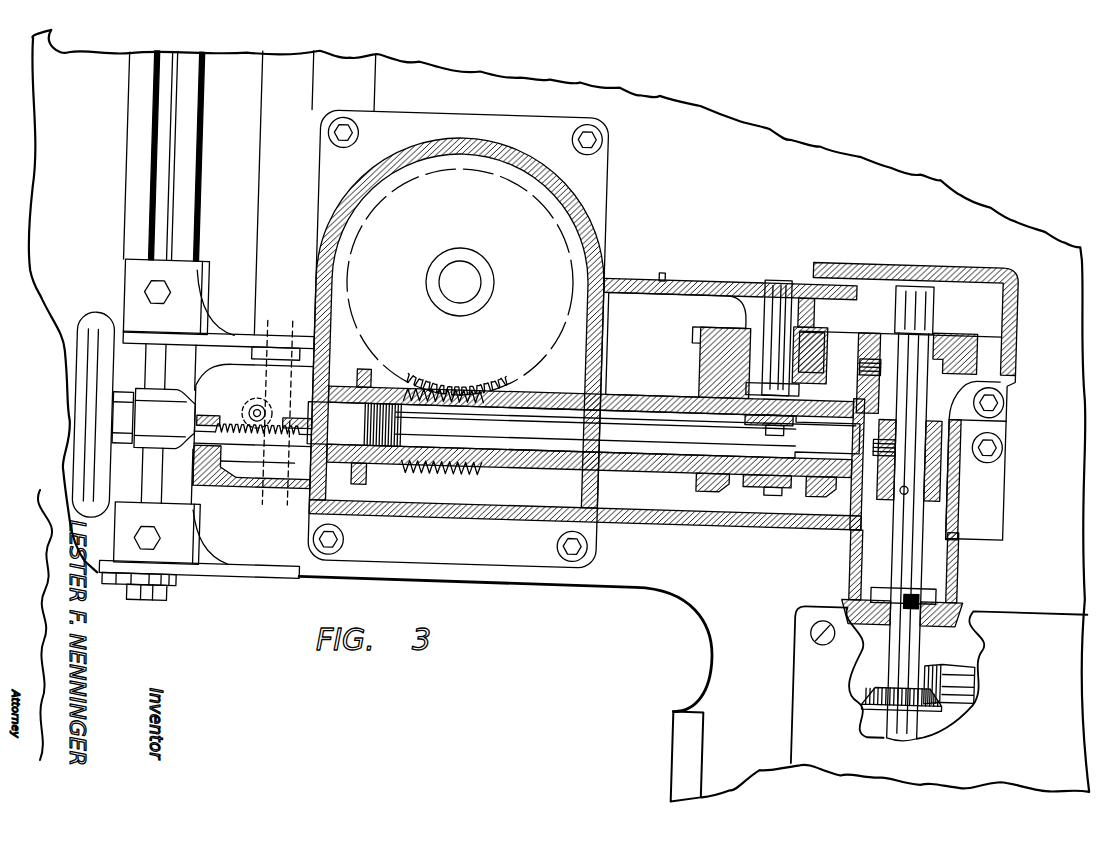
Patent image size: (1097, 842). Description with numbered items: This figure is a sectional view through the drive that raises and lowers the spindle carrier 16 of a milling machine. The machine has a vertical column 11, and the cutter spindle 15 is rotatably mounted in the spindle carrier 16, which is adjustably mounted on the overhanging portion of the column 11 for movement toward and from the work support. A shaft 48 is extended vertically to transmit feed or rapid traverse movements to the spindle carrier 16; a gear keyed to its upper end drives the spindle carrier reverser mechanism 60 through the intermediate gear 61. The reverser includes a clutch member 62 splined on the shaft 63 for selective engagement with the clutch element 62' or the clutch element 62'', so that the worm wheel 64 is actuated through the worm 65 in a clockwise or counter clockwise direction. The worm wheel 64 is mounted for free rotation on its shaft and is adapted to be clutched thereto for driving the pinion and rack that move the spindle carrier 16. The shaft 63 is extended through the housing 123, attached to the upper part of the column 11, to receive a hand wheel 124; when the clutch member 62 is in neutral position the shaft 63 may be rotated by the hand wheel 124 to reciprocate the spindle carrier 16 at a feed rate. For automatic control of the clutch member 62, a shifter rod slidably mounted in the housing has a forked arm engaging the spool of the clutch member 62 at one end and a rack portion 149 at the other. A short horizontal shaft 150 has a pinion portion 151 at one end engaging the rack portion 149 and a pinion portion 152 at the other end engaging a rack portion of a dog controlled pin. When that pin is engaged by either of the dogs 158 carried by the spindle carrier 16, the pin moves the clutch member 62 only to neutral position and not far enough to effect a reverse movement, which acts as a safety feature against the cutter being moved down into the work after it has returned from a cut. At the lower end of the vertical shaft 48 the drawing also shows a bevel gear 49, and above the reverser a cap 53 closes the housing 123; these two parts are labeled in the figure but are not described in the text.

The vertical column 11 is at (822, 174).
The cutter spindle 15 is at (150, 609).
The spindle carrier 16 is at (80, 36).
The shaft 48 is at (926, 631).
The bevel gear 49 is at (948, 695).
The cap 53 is at (966, 332).
The spindle carrier reverser mechanism 60 is at (784, 480).
The intermediate gear 61 is at (846, 340).
The clutch member 62 is at (763, 468).
The clutch element 62' is at (713, 498).
The clutch element 62'' is at (814, 501).
The shaft 63 is at (614, 390).
The worm wheel 64 is at (522, 343).
The worm 65 is at (464, 466).
The housing 123 is at (480, 515).
The hand wheel 124 is at (95, 364).
The rack portion 149 is at (236, 429).
The short horizontal shaft 150 is at (282, 406).
The pinion portion 151 is at (275, 466).
The pinion portion 152 is at (285, 360).
The dogs 158 is at (139, 320).